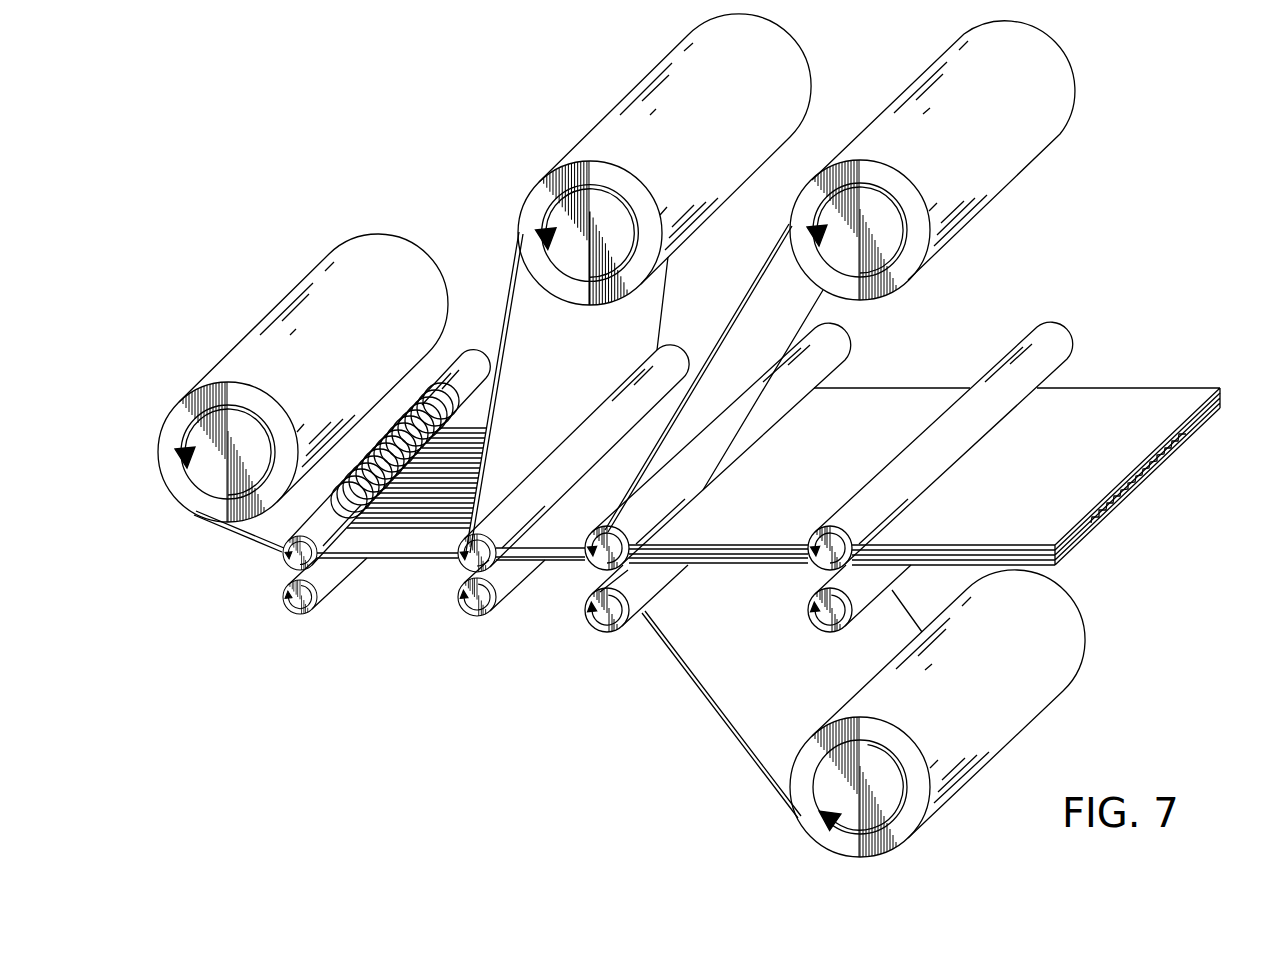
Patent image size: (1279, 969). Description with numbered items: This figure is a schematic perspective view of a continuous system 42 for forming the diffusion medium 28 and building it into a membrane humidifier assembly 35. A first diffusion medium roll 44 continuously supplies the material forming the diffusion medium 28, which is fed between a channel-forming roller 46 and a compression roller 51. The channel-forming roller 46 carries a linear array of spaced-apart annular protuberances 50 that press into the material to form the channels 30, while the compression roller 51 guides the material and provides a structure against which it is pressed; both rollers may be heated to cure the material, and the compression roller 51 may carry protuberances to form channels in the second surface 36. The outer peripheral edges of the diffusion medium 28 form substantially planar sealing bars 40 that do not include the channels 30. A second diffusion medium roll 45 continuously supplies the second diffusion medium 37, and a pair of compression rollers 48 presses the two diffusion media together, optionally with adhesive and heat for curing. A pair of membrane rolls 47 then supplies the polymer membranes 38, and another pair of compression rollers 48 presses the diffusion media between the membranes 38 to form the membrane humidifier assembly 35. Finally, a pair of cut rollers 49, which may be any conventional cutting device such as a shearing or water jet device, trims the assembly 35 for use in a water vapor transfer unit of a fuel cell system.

The continuous system 42 is at (210, 172).
The first diffusion medium roll 44 is at (237, 456).
The second diffusion medium roll 45 is at (598, 237).
The membrane rolls 47 is at (870, 236).
The channel-forming roller 46 is at (282, 563).
The compression roller 51 is at (282, 604).
The compression rollers 48 is at (558, 477).
The cut rollers 49 is at (934, 452).
The annular protuberances 50 is at (420, 403).
The channels 30 is at (470, 447).
The second diffusion medium 37 is at (558, 371).
The membranes 38 is at (753, 331).
The sealing bars 40 is at (383, 548).
The membrane humidifier assembly 35 is at (1191, 389).
The second surface 36 is at (1190, 437).
The diffusion medium 28 is at (1093, 527).